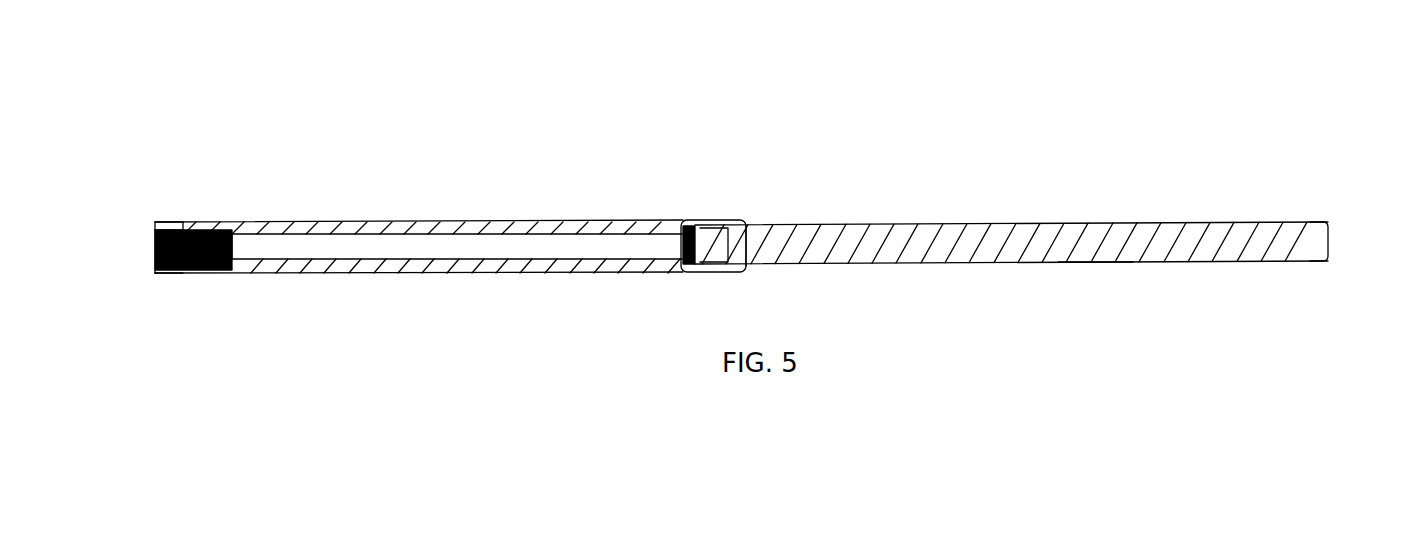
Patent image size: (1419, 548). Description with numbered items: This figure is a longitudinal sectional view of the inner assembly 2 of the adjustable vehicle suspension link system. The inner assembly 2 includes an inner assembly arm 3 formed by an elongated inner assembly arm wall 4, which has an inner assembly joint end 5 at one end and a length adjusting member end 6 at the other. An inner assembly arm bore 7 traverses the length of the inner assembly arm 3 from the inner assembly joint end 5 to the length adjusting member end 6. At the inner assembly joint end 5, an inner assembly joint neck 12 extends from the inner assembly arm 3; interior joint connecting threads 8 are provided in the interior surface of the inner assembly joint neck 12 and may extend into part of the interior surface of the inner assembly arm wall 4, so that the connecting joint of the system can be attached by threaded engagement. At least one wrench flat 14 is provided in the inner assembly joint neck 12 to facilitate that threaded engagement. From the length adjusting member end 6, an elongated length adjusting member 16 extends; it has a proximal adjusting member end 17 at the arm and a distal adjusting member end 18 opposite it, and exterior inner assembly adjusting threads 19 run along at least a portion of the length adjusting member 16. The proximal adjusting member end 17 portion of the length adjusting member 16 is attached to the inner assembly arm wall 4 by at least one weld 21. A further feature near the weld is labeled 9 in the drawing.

The inner assembly 2 is at (645, 150).
The inner assembly arm 3 is at (450, 205).
The inner assembly arm wall 4 is at (556, 233).
The inner assembly joint end 5 is at (185, 222).
The length adjusting member end 6 is at (748, 226).
The inner assembly arm bore 7 is at (382, 243).
The joint connecting threads 8 is at (234, 247).
The piston seat 9 is at (723, 252).
The inner assembly joint neck 12 is at (153, 236).
The wrench flat 14 is at (167, 223).
The length adjusting member 16 is at (978, 208).
The proximal adjusting member end 17 is at (672, 247).
The distal adjusting member end 18 is at (1330, 236).
The inner assembly adjusting threads 19 is at (1133, 262).
The weld 21 is at (697, 220).